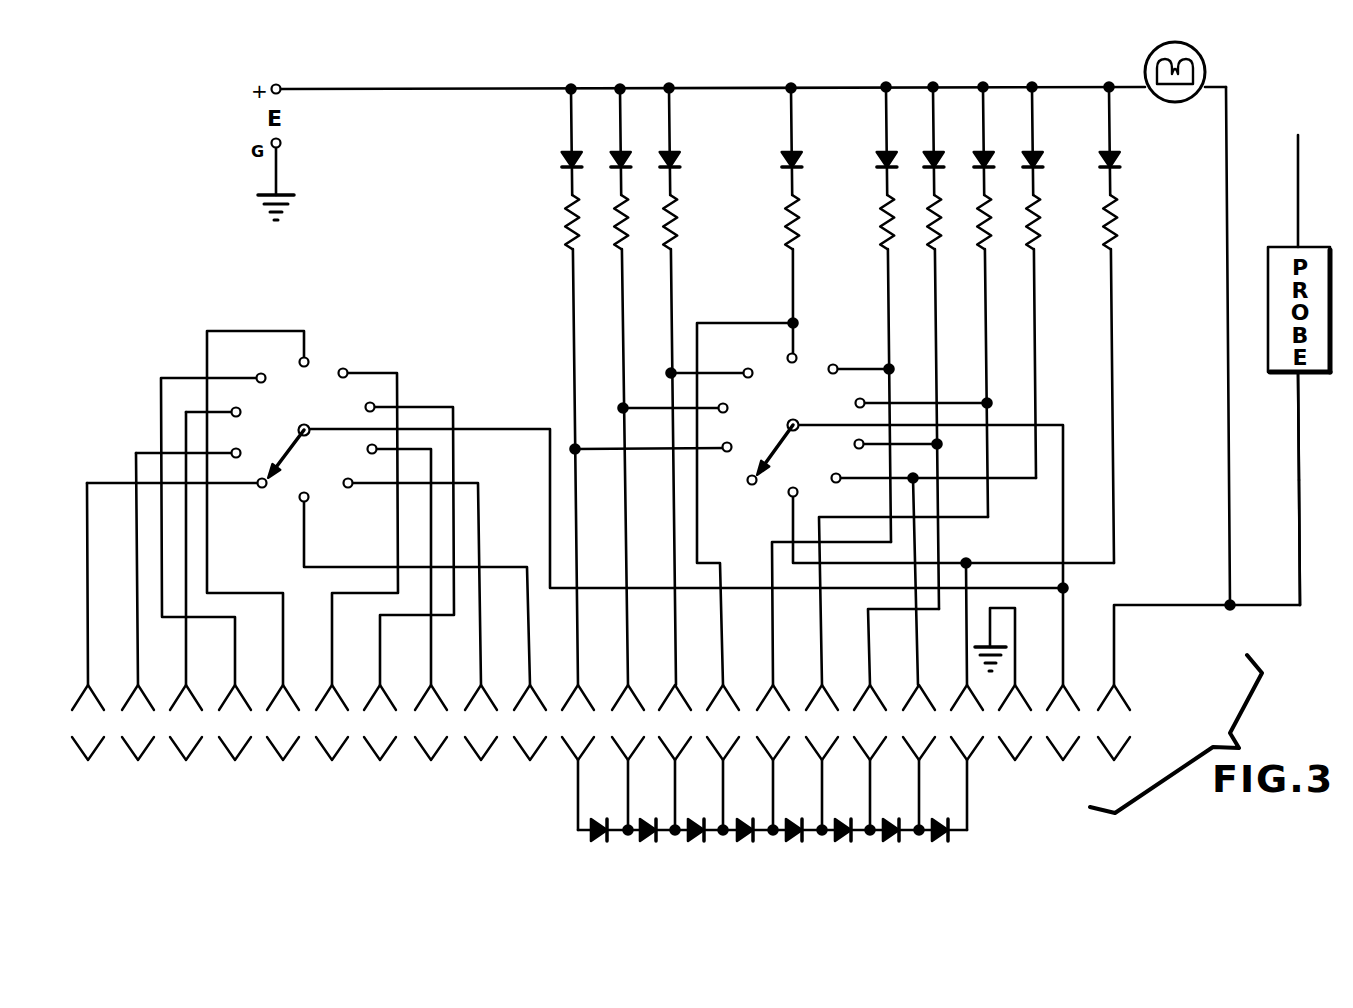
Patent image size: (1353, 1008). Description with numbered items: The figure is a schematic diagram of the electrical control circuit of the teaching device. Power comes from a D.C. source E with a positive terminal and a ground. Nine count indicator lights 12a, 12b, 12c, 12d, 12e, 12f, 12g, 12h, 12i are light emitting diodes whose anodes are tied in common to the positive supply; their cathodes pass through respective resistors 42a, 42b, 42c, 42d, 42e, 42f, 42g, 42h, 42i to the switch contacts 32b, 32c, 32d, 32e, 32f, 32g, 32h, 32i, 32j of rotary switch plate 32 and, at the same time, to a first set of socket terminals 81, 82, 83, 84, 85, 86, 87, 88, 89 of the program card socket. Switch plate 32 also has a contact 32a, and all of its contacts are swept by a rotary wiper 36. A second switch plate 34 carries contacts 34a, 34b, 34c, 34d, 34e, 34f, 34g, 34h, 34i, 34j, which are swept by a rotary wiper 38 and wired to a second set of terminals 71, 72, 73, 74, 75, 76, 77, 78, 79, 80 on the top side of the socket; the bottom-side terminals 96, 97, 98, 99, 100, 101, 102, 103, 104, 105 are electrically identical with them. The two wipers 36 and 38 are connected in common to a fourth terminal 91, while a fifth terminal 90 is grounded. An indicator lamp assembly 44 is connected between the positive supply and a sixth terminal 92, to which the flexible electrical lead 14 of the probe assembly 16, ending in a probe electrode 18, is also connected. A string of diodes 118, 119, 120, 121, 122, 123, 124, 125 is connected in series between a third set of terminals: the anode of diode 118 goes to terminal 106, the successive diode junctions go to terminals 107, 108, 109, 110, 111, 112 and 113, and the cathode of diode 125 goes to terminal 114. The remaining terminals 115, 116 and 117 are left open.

The count indicator light 12a is at (566, 152).
The count indicator light 12b is at (617, 152).
The count indicator light 12c is at (672, 152).
The count indicator light 12d is at (794, 152).
The count indicator light 12e is at (885, 152).
The count indicator light 12f is at (936, 152).
The count indicator light 12g is at (987, 152).
The count indicator light 12h is at (1037, 152).
The count indicator light 12i is at (1114, 152).
The resistor 42a is at (566, 222).
The resistor 42b is at (617, 237).
The resistor 42c is at (678, 228).
The resistor 42d is at (797, 228).
The resistor 42e is at (887, 223).
The resistor 42f is at (941, 230).
The resistor 42g is at (988, 233).
The resistor 42h is at (1038, 225).
The resistor 42i is at (1118, 225).
The lamp assembly 44 is at (1205, 53).
The probe electrode 18 is at (1300, 147).
The probe assembly 16 is at (1313, 375).
The flexible electrical lead 14 is at (1301, 583).
The switch plate 34 is at (292, 405).
The switch contact 34a is at (262, 488).
The switch contact 34b is at (240, 452).
The switch contact 34c is at (241, 412).
The switch contact 34d is at (258, 375).
The switch contact 34e is at (308, 359).
The switch contact 34f is at (347, 371).
The switch contact 34g is at (374, 405).
The switch contact 34h is at (367, 449).
The switch contact 34i is at (351, 487).
The switch contact 34j is at (307, 501).
The rotary wiper 38 is at (284, 456).
The switch plate 32 is at (777, 404).
The switch contact 32a is at (749, 484).
The switch contact 32b is at (727, 452).
The switch contact 32c is at (728, 409).
The switch contact 32d is at (745, 370).
The switch contact 32e is at (796, 354).
The switch contact 32f is at (837, 366).
The switch contact 32g is at (856, 402).
The switch contact 32h is at (858, 449).
The switch contact 32i is at (836, 483).
The switch contact 32j is at (797, 480).
The rotary wiper 36 is at (779, 447).
The socket terminal 71 is at (88, 704).
The socket terminal 72 is at (138, 704).
The socket terminal 73 is at (186, 704).
The socket terminal 74 is at (235, 704).
The socket terminal 75 is at (283, 704).
The socket terminal 76 is at (332, 704).
The socket terminal 77 is at (380, 704).
The socket terminal 78 is at (431, 704).
The socket terminal 79 is at (481, 704).
The socket terminal 80 is at (530, 704).
The socket terminal 81 is at (578, 704).
The socket terminal 82 is at (628, 704).
The socket terminal 83 is at (675, 704).
The socket terminal 84 is at (723, 704).
The socket terminal 85 is at (773, 704).
The socket terminal 86 is at (822, 704).
The socket terminal 87 is at (870, 704).
The socket terminal 88 is at (919, 704).
The socket terminal 89 is at (967, 704).
The socket terminal 90 is at (1015, 704).
The socket terminal 91 is at (1063, 704).
The socket terminal 92 is at (1114, 704).
The socket terminal 96 is at (88, 741).
The socket terminal 97 is at (138, 741).
The socket terminal 98 is at (186, 741).
The socket terminal 99 is at (235, 741).
The socket terminal 100 is at (283, 741).
The socket terminal 101 is at (332, 741).
The socket terminal 102 is at (380, 741).
The socket terminal 103 is at (431, 741).
The socket terminal 104 is at (481, 741).
The socket terminal 105 is at (530, 741).
The socket terminal 106 is at (578, 741).
The socket terminal 107 is at (628, 741).
The socket terminal 108 is at (675, 741).
The socket terminal 109 is at (723, 741).
The socket terminal 110 is at (773, 741).
The socket terminal 111 is at (822, 741).
The socket terminal 112 is at (870, 741).
The socket terminal 113 is at (919, 741).
The socket terminal 114 is at (967, 741).
The socket terminal 115 is at (1015, 741).
The socket terminal 116 is at (1063, 741).
The socket terminal 117 is at (1114, 741).
The diode 118 is at (599, 842).
The diode 119 is at (647, 842).
The diode 120 is at (692, 842).
The diode 121 is at (740, 842).
The diode 122 is at (789, 842).
The diode 123 is at (840, 842).
The diode 124 is at (888, 842).
The diode 125 is at (938, 842).